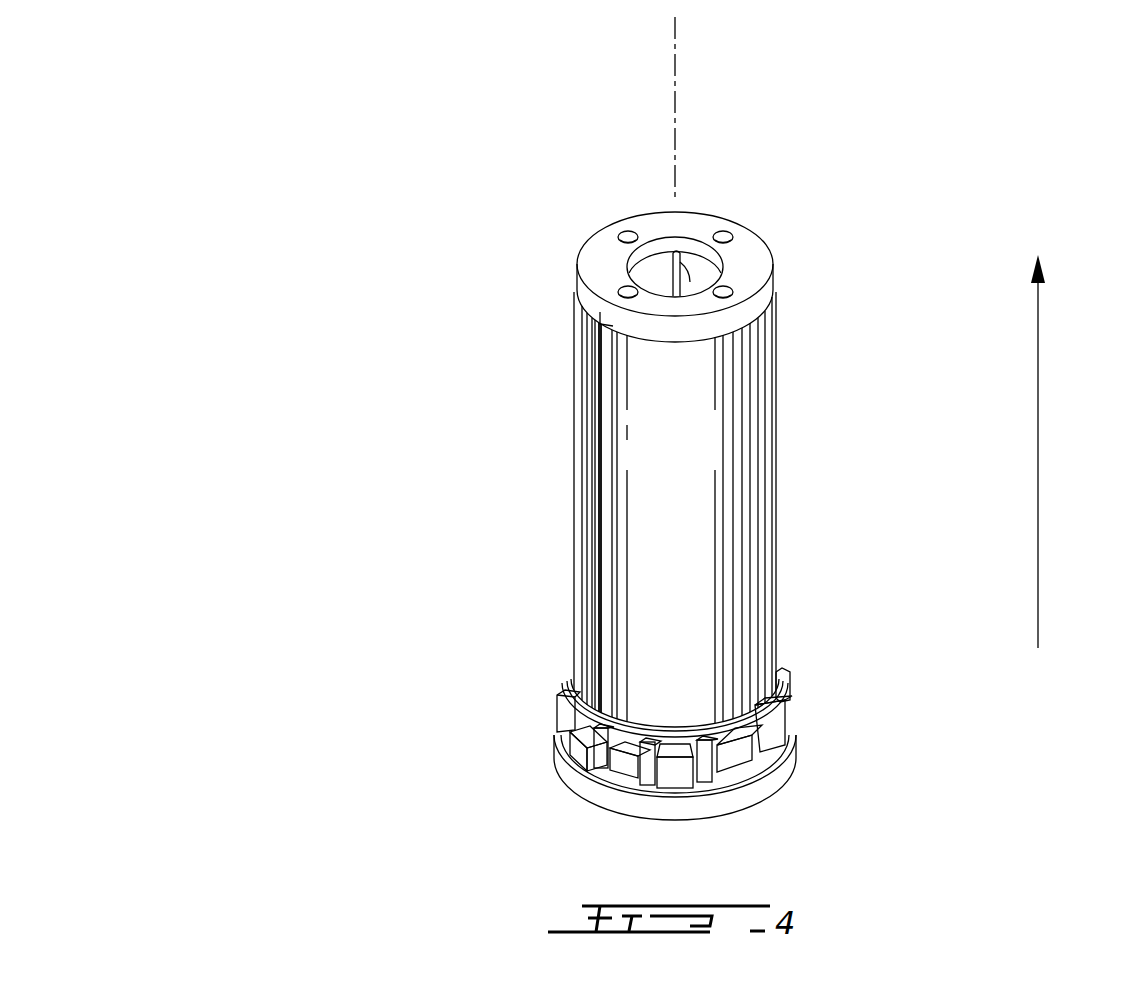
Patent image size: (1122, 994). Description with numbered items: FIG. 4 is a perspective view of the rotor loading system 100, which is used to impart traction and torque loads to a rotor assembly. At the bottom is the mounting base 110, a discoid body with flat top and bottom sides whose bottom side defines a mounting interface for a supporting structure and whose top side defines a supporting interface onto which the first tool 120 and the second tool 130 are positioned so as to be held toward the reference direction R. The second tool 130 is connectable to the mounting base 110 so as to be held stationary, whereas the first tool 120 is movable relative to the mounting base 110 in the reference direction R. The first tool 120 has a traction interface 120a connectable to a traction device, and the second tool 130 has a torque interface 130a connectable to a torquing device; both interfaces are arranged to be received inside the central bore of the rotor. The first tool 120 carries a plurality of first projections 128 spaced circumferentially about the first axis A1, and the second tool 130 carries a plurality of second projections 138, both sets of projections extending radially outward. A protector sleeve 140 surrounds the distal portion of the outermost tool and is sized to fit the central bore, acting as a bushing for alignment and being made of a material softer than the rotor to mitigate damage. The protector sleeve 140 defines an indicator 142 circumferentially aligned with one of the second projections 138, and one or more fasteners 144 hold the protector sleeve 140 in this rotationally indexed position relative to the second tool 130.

The rotor loading system 100 is at (226, 212).
The mounting base 110 is at (749, 808).
The first tool 120 is at (763, 766).
The traction interface 120a is at (651, 262).
The first projections 128 is at (674, 762).
The second tool 130 is at (786, 751).
The torque interface 130a is at (688, 262).
The second projections 138 is at (568, 708).
The protector sleeve 140 is at (766, 556).
The indicator 142 is at (605, 490).
The fasteners 144 is at (606, 280).
The first axis A1 is at (676, 52).
The reference direction R is at (1040, 458).